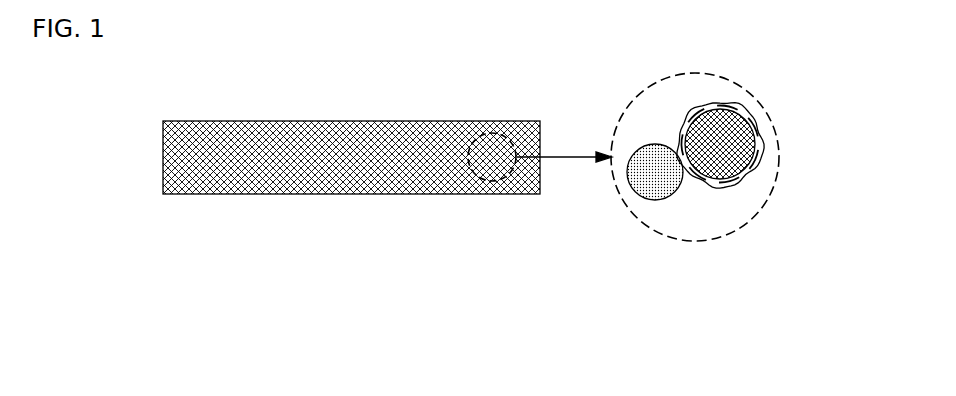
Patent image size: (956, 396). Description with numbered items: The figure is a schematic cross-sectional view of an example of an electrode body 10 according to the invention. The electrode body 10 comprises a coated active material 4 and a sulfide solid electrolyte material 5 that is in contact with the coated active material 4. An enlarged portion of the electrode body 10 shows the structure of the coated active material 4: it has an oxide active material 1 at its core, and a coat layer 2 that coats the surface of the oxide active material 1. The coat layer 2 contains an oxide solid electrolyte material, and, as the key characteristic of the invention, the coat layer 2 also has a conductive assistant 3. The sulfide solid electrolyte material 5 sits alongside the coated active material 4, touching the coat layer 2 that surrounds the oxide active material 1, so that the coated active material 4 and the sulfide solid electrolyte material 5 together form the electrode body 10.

The electrode body 10 is at (473, 88).
The oxide active material 1 is at (742, 166).
The coat layer 2 is at (757, 146).
The conductive assistant 3 is at (758, 121).
The coated active material 4 is at (832, 108).
The sulfide solid electrolyte material 5 is at (647, 198).